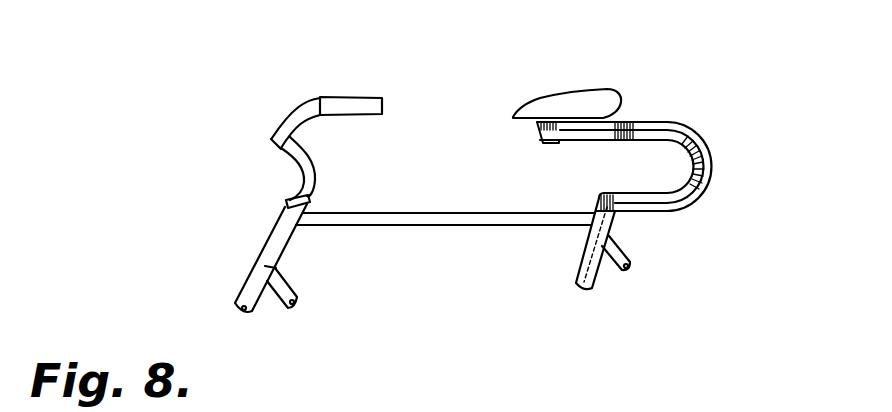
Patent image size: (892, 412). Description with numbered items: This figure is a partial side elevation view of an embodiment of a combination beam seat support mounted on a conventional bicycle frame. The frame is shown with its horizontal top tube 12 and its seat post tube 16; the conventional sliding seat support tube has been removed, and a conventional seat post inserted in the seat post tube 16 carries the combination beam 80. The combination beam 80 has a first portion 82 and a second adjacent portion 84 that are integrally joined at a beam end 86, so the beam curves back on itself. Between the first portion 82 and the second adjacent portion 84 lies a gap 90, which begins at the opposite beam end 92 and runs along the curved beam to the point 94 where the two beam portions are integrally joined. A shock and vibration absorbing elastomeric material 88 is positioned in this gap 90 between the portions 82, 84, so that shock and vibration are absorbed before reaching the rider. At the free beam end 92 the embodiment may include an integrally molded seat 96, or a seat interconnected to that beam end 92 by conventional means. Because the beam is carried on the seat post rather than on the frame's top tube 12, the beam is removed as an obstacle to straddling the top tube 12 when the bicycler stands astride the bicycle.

The top tube 12 is at (378, 226).
The seat post tube 16 is at (593, 279).
The combination beam 80 is at (712, 150).
The first portion 82 is at (648, 213).
The second adjacent portion 84 is at (583, 141).
The beam end 86 is at (597, 203).
The shock and vibration absorbing elastomeric material 88 is at (643, 124).
The gap 90 is at (537, 128).
The beam end 92 is at (543, 145).
The point 94 is at (641, 194).
The integrally molded seat 96 is at (612, 88).